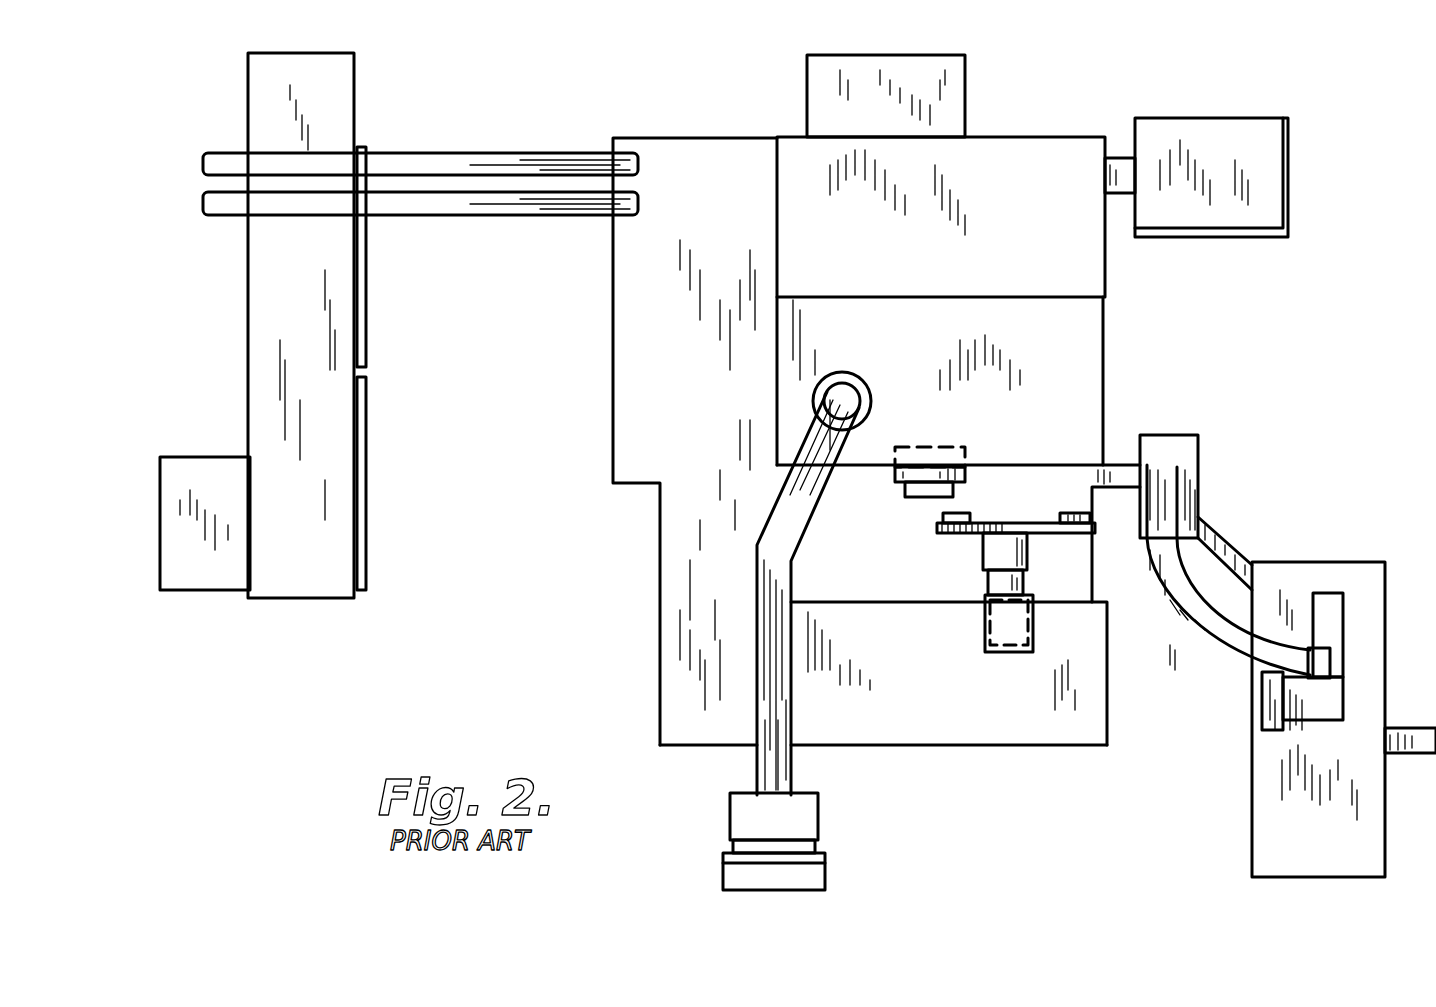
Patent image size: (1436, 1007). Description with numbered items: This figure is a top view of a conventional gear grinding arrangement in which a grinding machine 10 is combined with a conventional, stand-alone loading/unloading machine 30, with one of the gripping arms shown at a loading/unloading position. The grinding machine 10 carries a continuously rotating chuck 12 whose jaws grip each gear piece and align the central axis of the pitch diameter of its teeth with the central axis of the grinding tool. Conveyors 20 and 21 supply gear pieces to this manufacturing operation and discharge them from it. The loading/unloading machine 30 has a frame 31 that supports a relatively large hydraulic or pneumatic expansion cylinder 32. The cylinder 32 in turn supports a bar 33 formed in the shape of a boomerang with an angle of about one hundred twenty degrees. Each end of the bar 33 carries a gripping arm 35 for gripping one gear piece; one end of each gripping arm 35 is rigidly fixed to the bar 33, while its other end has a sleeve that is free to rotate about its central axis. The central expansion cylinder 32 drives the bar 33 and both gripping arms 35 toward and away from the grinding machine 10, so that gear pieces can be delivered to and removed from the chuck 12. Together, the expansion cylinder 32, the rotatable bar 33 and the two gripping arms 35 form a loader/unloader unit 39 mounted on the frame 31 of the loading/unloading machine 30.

The grinding machine 10 is at (970, 333).
The chuck 12 is at (967, 475).
The conveyor 20 is at (1223, 627).
The conveyor 21 is at (1223, 543).
The loading/unloading machine 30 is at (998, 707).
The frame 31 is at (938, 727).
The expansion cylinder 32 is at (1013, 587).
The bar 33 is at (963, 535).
The gripping arm 35 is at (943, 518).
The loader/unloader unit 39 is at (983, 627).